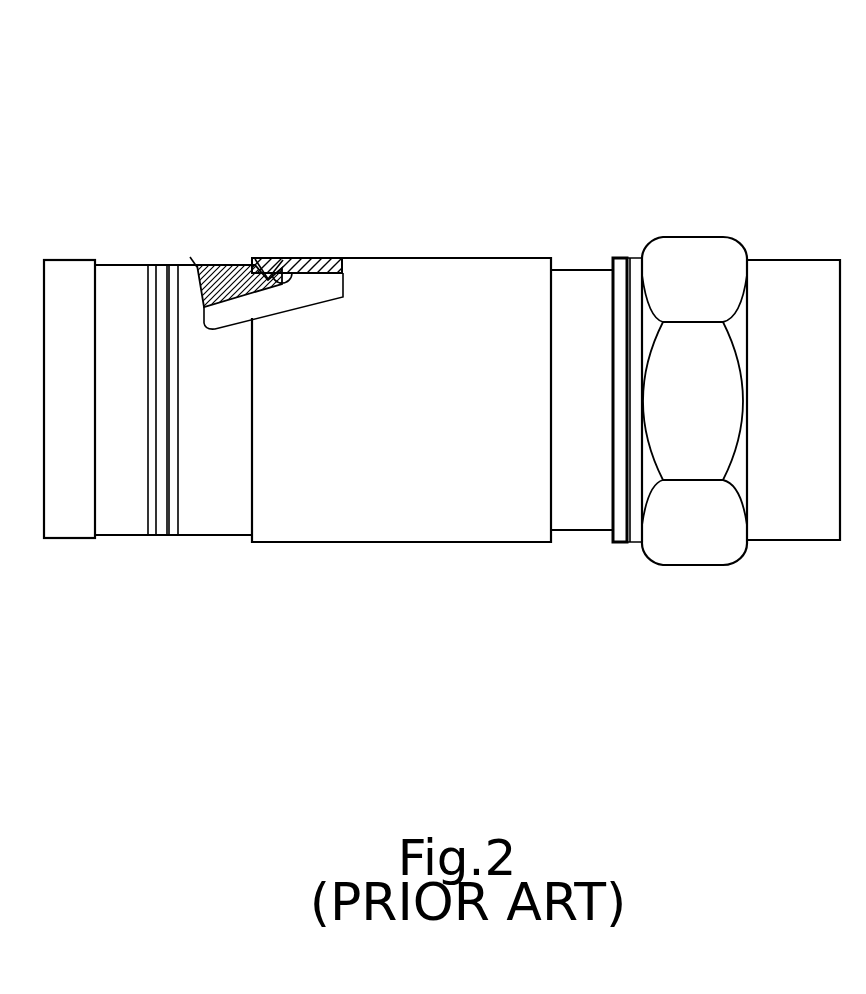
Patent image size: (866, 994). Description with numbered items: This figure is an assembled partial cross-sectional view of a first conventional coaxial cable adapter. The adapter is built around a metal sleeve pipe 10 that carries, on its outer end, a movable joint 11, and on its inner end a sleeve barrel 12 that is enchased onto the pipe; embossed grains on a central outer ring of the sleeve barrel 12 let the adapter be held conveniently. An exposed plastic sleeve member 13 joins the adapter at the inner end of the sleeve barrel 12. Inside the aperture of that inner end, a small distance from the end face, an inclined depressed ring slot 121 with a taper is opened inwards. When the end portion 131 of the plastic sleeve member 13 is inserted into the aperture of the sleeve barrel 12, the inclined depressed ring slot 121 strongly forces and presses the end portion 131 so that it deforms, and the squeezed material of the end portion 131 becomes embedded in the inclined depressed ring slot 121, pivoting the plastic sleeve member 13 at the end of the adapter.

The metal sleeve pipe 10 is at (408, 92).
The movable joint 11 is at (770, 278).
The sleeve barrel 12 is at (419, 363).
The plastic sleeve member 13 is at (143, 285).
The inclined depressed ring slot 121 is at (298, 259).
The end portion 131 is at (268, 278).